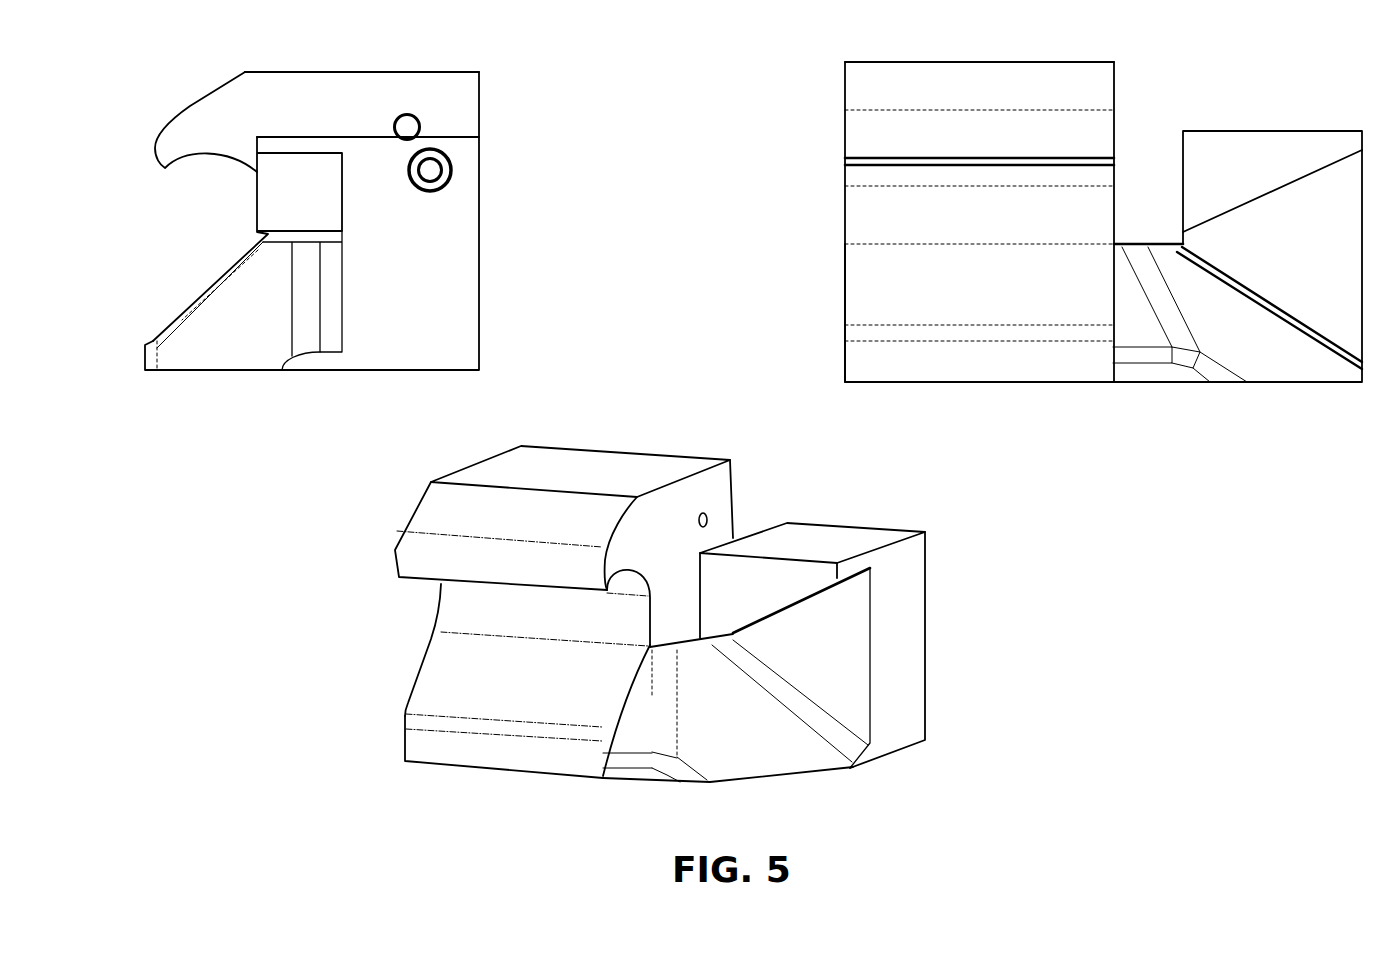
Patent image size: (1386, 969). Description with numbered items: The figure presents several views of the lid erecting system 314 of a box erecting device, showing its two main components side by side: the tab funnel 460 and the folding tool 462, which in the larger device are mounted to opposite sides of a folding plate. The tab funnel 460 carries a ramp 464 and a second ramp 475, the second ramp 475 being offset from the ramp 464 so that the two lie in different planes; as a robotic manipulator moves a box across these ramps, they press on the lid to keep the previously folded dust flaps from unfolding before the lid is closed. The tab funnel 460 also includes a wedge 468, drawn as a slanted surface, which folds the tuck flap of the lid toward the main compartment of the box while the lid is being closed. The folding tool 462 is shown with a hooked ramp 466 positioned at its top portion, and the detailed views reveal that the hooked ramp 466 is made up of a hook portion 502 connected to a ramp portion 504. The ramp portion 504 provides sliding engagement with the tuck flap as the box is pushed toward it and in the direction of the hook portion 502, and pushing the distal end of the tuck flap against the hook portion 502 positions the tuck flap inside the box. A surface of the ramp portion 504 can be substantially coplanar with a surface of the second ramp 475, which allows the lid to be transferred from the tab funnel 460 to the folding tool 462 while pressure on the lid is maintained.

The lid erecting system 314 is at (522, 87).
The tab funnel 460 is at (470, 302).
The folding tool 462 is at (350, 84).
The ramp 464 is at (272, 280).
The hooked ramp 466 is at (218, 110).
The wedge 468 is at (1259, 200).
The second ramp 475 is at (206, 300).
The hook portion 502 is at (240, 166).
The ramp portion 504 is at (859, 285).